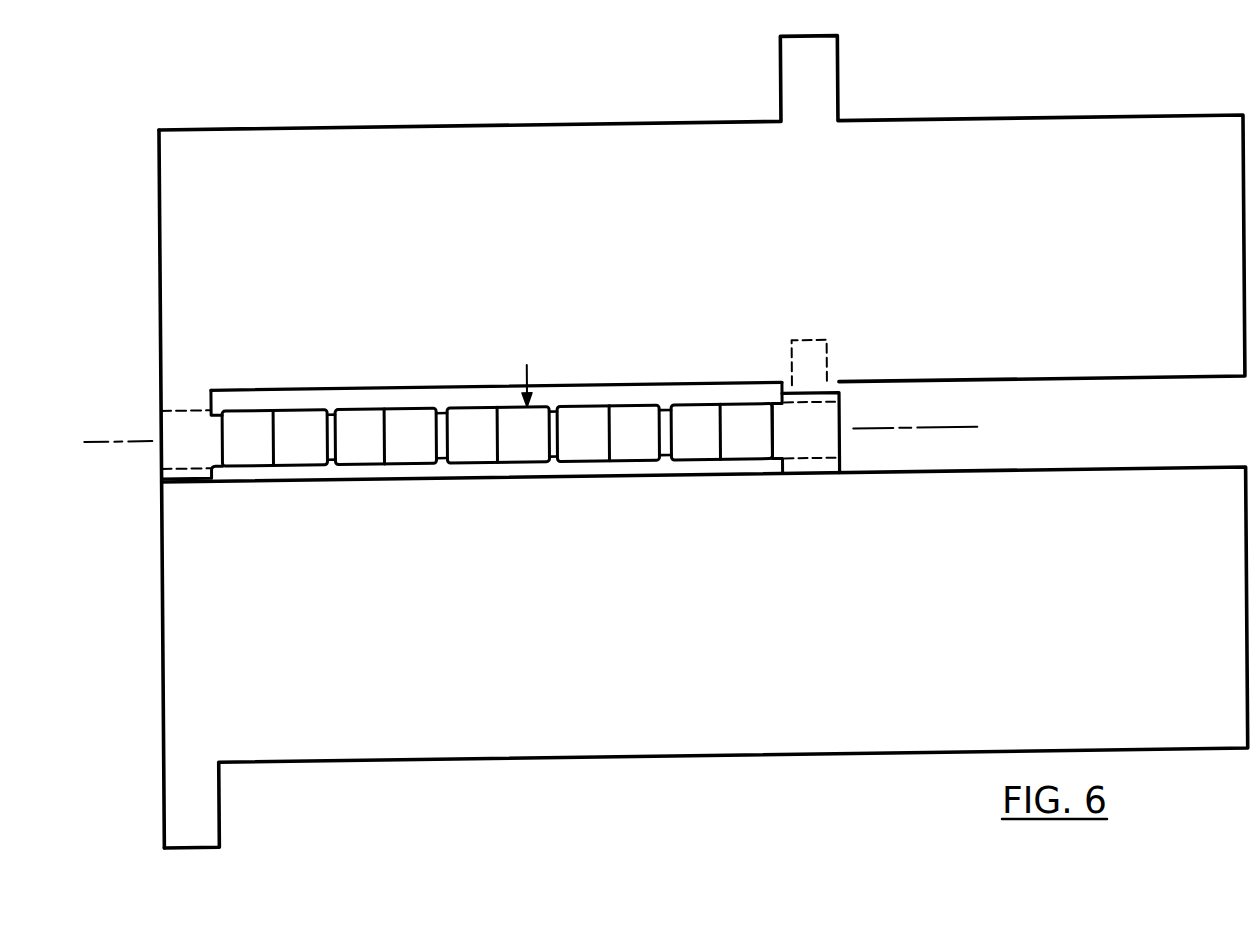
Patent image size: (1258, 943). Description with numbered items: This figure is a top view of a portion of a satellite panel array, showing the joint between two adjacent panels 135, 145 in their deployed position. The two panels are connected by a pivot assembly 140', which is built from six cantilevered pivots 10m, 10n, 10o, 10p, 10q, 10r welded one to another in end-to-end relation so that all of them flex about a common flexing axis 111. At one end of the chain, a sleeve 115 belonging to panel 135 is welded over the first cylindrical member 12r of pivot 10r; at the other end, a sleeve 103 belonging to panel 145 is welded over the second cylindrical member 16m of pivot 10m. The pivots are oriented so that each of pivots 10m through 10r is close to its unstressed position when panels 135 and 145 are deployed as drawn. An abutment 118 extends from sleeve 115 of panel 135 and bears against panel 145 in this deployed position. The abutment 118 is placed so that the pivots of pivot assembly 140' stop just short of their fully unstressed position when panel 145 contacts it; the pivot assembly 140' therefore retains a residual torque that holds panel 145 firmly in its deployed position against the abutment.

The panel 145 is at (711, 213).
The panel 135 is at (718, 603).
The sleeve 103 is at (213, 472).
The second cylindrical member 16m is at (188, 472).
The pivot 10m is at (248, 412).
The pivot 10n is at (363, 412).
The pivot 10o is at (475, 412).
The pivot 10p is at (592, 412).
The pivot 10q is at (700, 412).
The pivot 10r is at (753, 412).
The pivot assembly 140' is at (532, 374).
The sleeve 115 is at (836, 400).
The abutment 118 is at (808, 349).
The first cylindrical member 12r is at (813, 469).
The flexing axis 111 is at (933, 437).